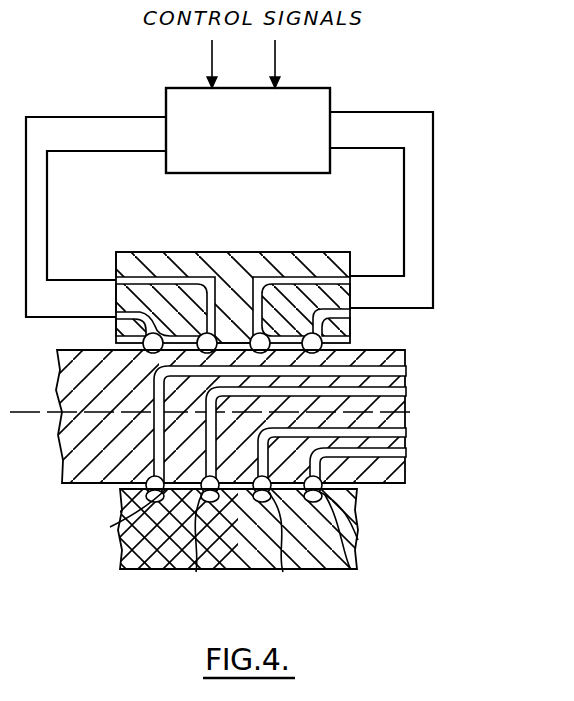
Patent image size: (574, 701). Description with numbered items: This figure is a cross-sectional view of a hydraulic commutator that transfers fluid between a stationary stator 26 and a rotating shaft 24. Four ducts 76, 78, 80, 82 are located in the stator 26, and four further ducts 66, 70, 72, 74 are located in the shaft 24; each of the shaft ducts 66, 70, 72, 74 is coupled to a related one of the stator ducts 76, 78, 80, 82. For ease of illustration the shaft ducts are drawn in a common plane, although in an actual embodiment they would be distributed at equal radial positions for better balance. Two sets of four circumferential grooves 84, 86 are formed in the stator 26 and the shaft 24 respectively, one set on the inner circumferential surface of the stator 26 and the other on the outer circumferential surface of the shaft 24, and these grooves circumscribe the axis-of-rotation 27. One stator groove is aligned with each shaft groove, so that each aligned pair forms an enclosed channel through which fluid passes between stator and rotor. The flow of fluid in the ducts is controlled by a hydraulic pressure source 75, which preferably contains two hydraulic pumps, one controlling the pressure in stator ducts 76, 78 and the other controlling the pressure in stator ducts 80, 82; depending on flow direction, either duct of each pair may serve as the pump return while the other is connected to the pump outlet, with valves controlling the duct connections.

The shaft 24 is at (52, 494).
The stator 26 is at (249, 252).
The axis-of-rotation 27 is at (50, 413).
The shaft duct 66 is at (407, 368).
The shaft duct 70 is at (405, 432).
The shaft duct 72 is at (405, 390).
The shaft duct 74 is at (405, 449).
The hydraulic pressure source 75 is at (333, 88).
The stator duct 76 is at (128, 311).
The stator duct 78 is at (172, 281).
The stator duct 80 is at (325, 278).
The stator duct 82 is at (350, 309).
The circumferential grooves 84 is at (120, 500).
The circumferential grooves 86 is at (120, 532).